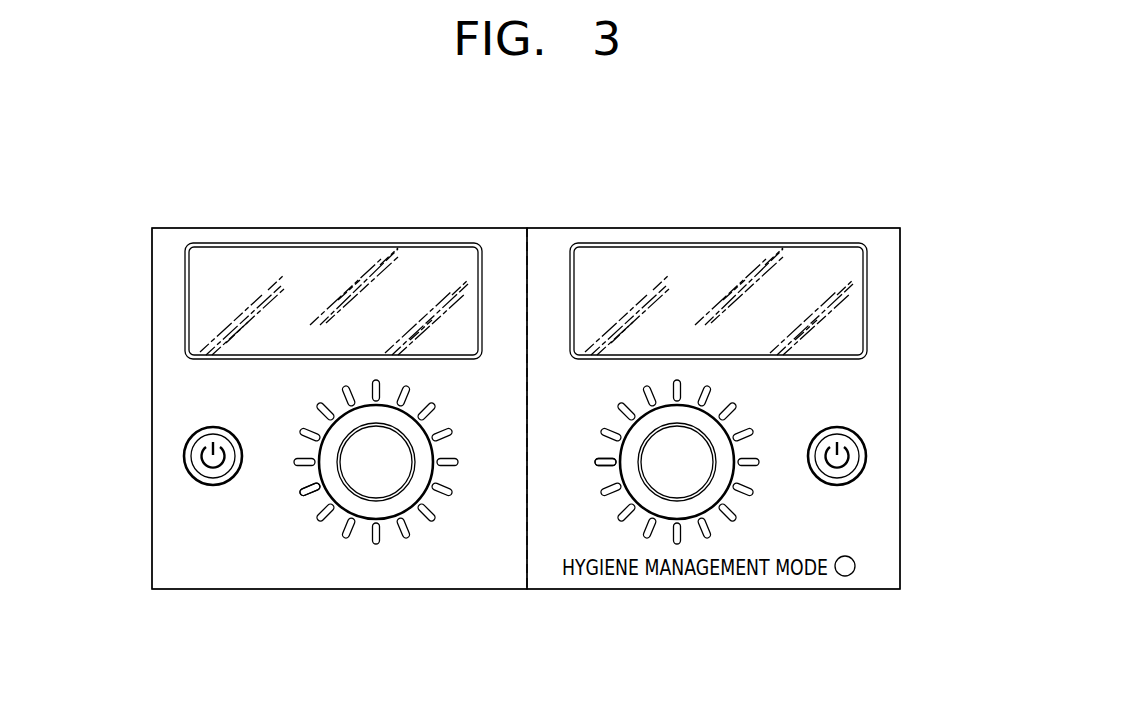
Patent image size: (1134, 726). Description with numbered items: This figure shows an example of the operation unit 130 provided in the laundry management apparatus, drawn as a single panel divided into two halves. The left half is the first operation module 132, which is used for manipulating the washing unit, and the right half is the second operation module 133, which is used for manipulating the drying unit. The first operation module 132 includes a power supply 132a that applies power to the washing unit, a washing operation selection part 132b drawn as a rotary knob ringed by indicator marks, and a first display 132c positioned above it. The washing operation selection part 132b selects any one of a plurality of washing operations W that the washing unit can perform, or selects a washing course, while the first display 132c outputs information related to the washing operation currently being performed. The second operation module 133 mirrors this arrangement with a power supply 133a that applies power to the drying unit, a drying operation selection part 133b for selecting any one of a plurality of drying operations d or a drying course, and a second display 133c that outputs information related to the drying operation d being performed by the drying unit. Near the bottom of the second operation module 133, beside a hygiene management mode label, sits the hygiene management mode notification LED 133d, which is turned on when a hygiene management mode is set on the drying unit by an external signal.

The operation unit 130 is at (865, 170).
The first operation module 132 is at (152, 246).
The second operation module 133 is at (904, 246).
The power supply 132a is at (197, 457).
The power supply 133a is at (858, 457).
The washing operation selection part 132b is at (367, 490).
The drying operation selection part 133b is at (635, 493).
The first display 132c is at (327, 252).
The second display 133c is at (725, 252).
The hygiene management mode notification LED 133d is at (845, 576).
The washing operations W is at (326, 516).
The drying operations d is at (597, 465).